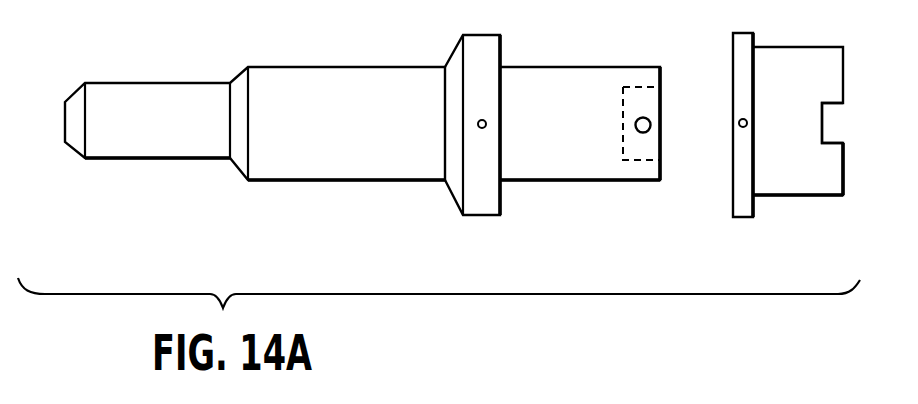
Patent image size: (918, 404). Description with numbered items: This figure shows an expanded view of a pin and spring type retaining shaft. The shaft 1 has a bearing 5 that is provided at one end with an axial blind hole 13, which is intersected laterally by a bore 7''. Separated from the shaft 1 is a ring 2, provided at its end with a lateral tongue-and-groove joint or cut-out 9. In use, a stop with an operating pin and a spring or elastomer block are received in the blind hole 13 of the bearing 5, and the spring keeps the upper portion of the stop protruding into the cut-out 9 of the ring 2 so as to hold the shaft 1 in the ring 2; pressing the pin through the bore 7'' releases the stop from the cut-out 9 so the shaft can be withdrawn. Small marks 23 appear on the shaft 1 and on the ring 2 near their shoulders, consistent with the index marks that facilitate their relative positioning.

The shaft 1 is at (343, 162).
The ring 2 is at (800, 196).
The bearing 5 is at (584, 150).
The bore 7'' is at (614, 76).
The cut-out 9 is at (838, 127).
The blind hole 13 is at (636, 162).
The pin 23 is at (482, 129).